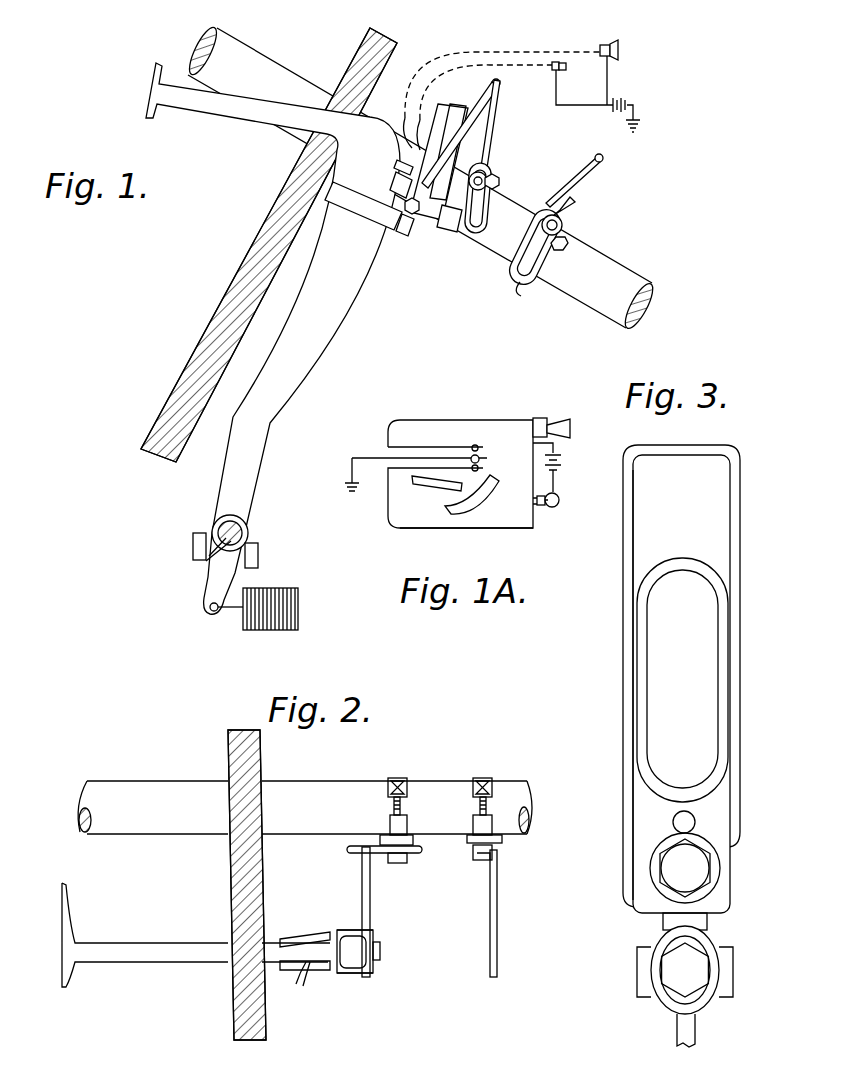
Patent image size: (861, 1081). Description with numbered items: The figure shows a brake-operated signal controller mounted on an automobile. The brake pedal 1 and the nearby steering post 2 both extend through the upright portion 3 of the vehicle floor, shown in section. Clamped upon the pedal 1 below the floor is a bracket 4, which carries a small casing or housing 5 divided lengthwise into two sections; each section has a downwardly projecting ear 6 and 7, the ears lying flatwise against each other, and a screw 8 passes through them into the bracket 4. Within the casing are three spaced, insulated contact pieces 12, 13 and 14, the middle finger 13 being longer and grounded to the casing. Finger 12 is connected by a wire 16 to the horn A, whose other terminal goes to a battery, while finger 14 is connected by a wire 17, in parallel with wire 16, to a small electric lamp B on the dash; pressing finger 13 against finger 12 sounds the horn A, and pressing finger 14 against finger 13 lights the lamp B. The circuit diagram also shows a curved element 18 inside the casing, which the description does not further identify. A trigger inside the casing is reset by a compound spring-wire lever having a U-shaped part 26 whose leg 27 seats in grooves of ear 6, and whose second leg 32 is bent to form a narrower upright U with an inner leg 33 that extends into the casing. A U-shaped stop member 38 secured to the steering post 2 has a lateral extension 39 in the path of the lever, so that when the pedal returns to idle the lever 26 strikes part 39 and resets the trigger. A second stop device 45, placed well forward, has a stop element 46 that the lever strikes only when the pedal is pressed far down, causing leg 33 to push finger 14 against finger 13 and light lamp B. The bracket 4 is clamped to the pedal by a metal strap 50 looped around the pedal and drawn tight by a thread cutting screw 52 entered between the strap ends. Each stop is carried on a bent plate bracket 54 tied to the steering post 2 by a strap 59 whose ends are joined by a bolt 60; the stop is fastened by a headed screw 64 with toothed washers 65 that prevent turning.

In FIG. 1, the brake pedal 1 is at (300, 348).
In FIG. 2, the brake pedal 1 is at (151, 950).
In FIG. 1, the steering post 2 is at (620, 273).
In FIG. 2, the steering post 2 is at (297, 783).
In FIG. 1, the upright portion of the floor 3 is at (228, 276).
In FIG. 2, the upright portion of the floor 3 is at (228, 740).
In FIG. 1, the bracket 4 is at (392, 192).
In FIG. 3, the bracket 4 is at (677, 1031).
In FIG. 1, the casing or housing 5 is at (463, 104).
In FIG. 3, the casing or housing 5 is at (682, 680).
In FIG. 2, the casing or housing 5 is at (357, 957).
In FIG. 1, the ear 6 is at (402, 178).
In FIG. 3, the ear 7 is at (712, 944).
In FIG. 1, the screw 8 is at (416, 212).
In FIG. 3, the screw 8 is at (700, 871).
In FIG. 1A, the contact piece 12 is at (442, 447).
In FIG. 1A, the middle contact finger 13 is at (486, 460).
In FIG. 1A, the contact finger 14 is at (405, 470).
In FIG. 1, the wire 16 is at (408, 148).
In FIG. 1A, the wire 16 is at (446, 418).
In FIG. 2, the wire 16 is at (312, 982).
In FIG. 1, the wire 17 is at (413, 120).
In FIG. 1A, the wire 17 is at (483, 530).
In FIG. 2, the wire 17 is at (291, 978).
In FIG. 1A, the curved contact arm 18 is at (489, 491).
In FIG. 1, the U-shaped part of lever 26 is at (501, 89).
In FIG. 3, the U-shaped part of lever 26 is at (687, 450).
In FIG. 2, the U-shaped part of lever 26 is at (383, 958).
In FIG. 3, the leg of the U 27 is at (628, 587).
In FIG. 2, the leg of the U 27 is at (362, 973).
In FIG. 3, the second leg of the lever 32 is at (733, 556).
In FIG. 2, the second leg of the lever 32 is at (355, 927).
In FIG. 1A, the inner leg of the second U 33 is at (435, 486).
In FIG. 1, the U-shaped member 38 is at (493, 128).
In FIG. 2, the U-shaped member 38 is at (352, 853).
In FIG. 1, the lateral extension 39 is at (494, 80).
In FIG. 2, the lateral extension 39 is at (371, 900).
In FIG. 1, the second stop device 45 is at (590, 188).
In FIG. 2, the second stop device 45 is at (477, 853).
In FIG. 1, the stop element 46 is at (606, 160).
In FIG. 2, the stop element 46 is at (497, 912).
In FIG. 1, the metal strap 50 is at (382, 218).
In FIG. 3, the metal strap 50 is at (728, 962).
In FIG. 2, the metal strap 50 is at (312, 939).
In FIG. 1, the thread cutting screw 52 is at (407, 238).
In FIG. 3, the thread cutting screw 52 is at (685, 970).
In FIG. 1, the bracket plate 54 is at (492, 183).
In FIG. 2, the bracket plate 54 is at (383, 837).
In FIG. 1, the strap 59 is at (516, 280).
In FIG. 2, the strap 59 is at (393, 778).
In FIG. 2, the bolt 60 is at (392, 803).
In FIG. 1, the headed screw 64 is at (500, 180).
In FIG. 2, the headed screw 64 is at (398, 863).
In FIG. 1, the toothed washers 65 is at (487, 167).
In FIG. 1, the horn A is at (621, 54).
In FIG. 1A, the horn A is at (566, 446).
In FIG. 1, the electric lamp B is at (565, 70).
In FIG. 1A, the electric lamp B is at (556, 508).